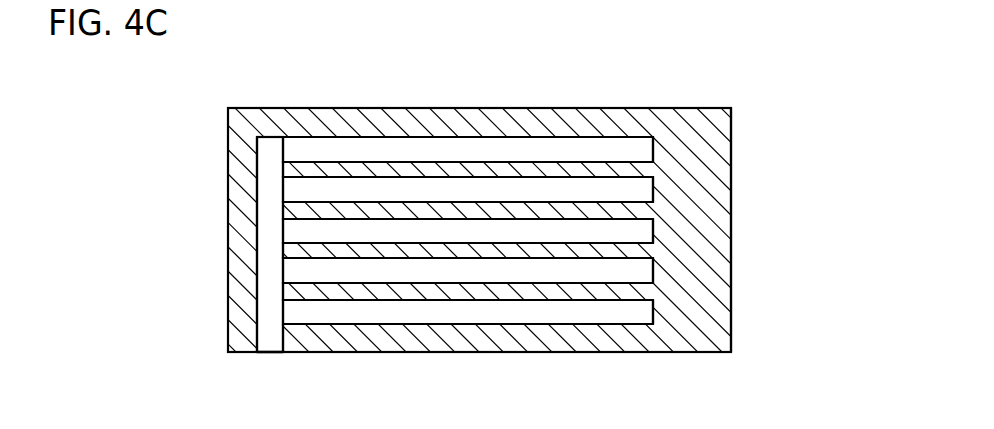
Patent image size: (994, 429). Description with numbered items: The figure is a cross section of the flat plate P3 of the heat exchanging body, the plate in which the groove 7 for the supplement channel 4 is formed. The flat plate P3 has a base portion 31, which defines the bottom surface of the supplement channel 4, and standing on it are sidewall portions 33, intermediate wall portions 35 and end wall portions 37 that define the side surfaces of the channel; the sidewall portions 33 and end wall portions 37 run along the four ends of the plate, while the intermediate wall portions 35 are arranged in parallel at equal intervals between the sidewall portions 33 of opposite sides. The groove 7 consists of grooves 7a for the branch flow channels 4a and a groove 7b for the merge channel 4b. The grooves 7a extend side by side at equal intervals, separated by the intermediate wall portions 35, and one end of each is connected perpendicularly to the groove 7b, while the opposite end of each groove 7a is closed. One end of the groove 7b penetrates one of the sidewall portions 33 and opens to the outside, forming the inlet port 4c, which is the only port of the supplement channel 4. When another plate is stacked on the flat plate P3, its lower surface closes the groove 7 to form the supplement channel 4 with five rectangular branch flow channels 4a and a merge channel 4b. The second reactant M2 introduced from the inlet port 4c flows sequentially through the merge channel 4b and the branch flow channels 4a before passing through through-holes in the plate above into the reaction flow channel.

The base portion 31 is at (625, 142).
The sidewall portions 33 is at (442, 112).
The intermediate wall portions 35 is at (333, 290).
The end wall portions 37 is at (232, 342).
The groove 7 is at (160, 138).
The supplement channel 4 is at (385, 244).
The grooves for branch flow channels 7a is at (290, 310).
The branch flow channels 4a is at (407, 230).
The groove for merge channel 7b is at (267, 150).
The merge channel 4b is at (222, 244).
The inlet port 4c is at (278, 353).
The second reactant M2 is at (271, 352).
The flat plate P3 is at (733, 135).